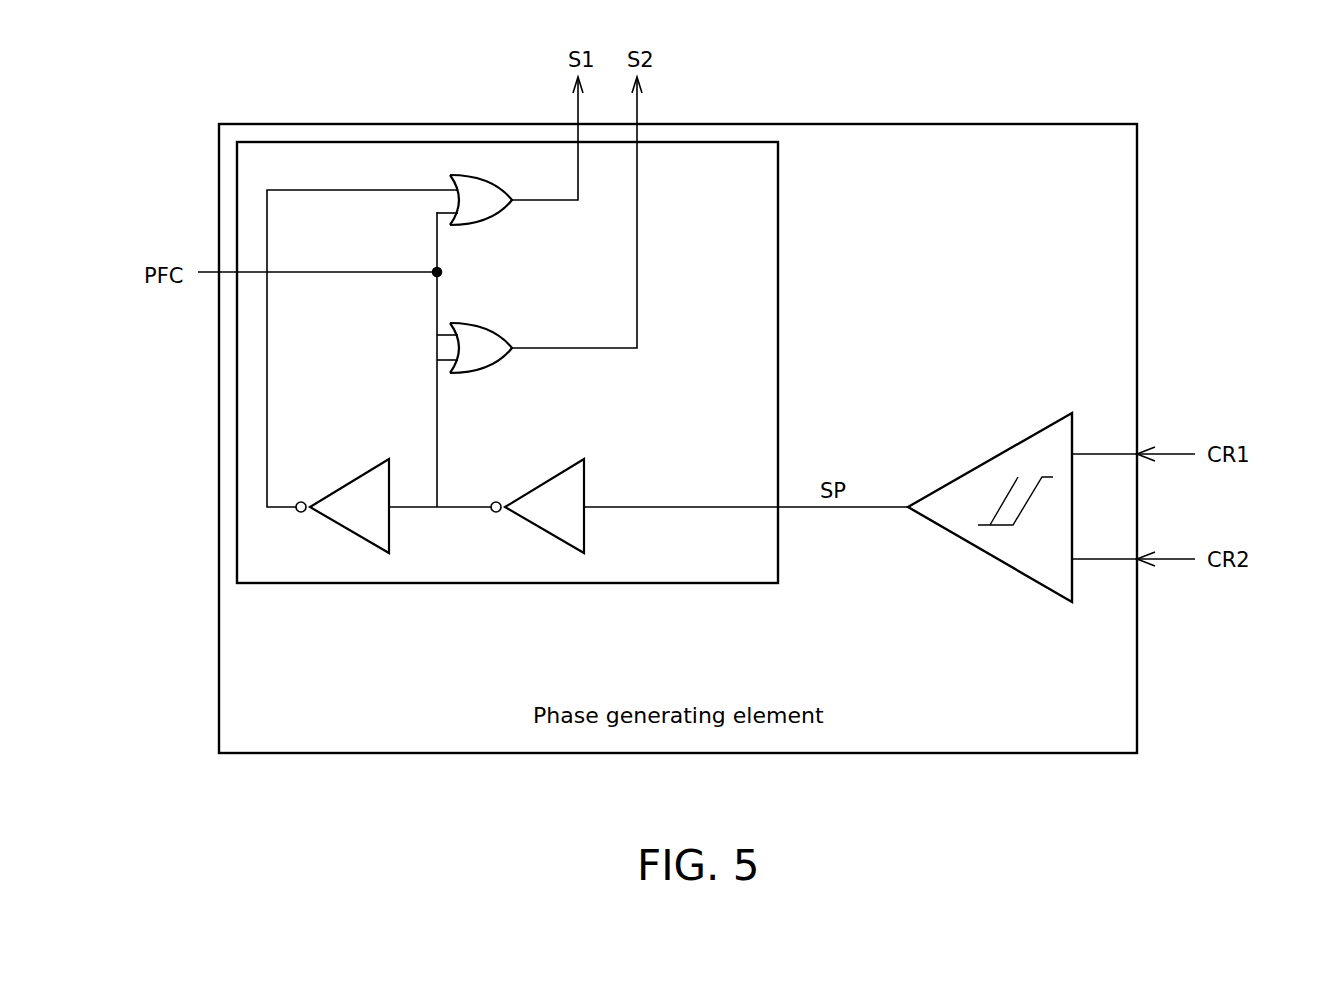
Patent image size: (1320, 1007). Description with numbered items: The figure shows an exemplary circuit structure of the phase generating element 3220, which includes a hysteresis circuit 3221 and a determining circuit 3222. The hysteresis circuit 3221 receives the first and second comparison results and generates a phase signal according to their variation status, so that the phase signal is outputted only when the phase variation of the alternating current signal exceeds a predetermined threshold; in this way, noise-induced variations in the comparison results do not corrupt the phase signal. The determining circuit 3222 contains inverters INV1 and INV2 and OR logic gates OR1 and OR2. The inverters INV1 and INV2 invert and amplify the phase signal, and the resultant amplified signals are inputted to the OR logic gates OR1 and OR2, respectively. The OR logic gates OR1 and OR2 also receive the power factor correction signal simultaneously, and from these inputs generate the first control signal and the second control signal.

The phase generating element 3220 is at (1137, 166).
The determining circuit 3222 is at (237, 182).
The hysteresis circuit 3221 is at (1013, 446).
The OR logic gate OR1 is at (510, 210).
The OR logic gate OR2 is at (510, 336).
The inverter INV1 is at (537, 530).
The inverter INV2 is at (342, 530).